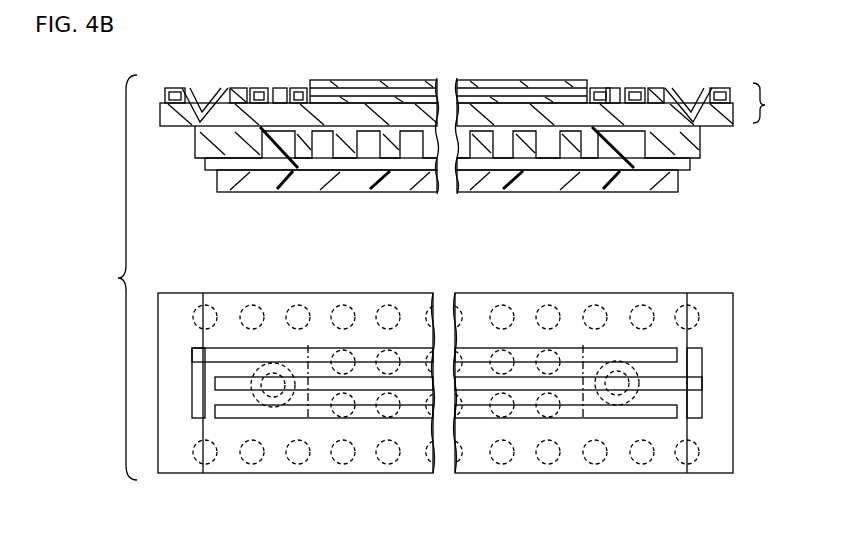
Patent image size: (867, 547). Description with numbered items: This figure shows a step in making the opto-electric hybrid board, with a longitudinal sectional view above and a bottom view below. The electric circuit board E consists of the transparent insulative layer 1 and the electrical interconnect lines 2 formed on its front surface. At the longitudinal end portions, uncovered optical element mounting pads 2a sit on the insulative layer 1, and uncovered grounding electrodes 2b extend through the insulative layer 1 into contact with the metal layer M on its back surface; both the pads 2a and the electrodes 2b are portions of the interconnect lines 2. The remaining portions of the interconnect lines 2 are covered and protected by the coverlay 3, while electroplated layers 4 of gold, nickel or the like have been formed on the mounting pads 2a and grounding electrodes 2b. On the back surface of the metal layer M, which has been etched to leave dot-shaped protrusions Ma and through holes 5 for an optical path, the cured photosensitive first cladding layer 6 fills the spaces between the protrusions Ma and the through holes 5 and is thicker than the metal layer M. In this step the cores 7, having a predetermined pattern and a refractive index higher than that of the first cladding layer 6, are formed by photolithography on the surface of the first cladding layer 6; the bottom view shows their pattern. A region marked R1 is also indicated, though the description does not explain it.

The insulative layer 1 is at (163, 128).
The electrical interconnect lines 2 is at (484, 100).
The optical element mounting pads 2a is at (258, 86).
The grounding electrodes 2b is at (178, 85).
The coverlay 3 is at (512, 88).
The electroplated layers 4 is at (215, 86).
The through holes for an optical path 5 is at (300, 131).
The first cladding layer 6 is at (312, 160).
The cores 7 is at (515, 405).
The dot-shaped protrusions Ma is at (405, 193).
The metal layer M is at (667, 193).
The electric circuit board E is at (768, 103).
The resistance region R1 is at (528, 252).